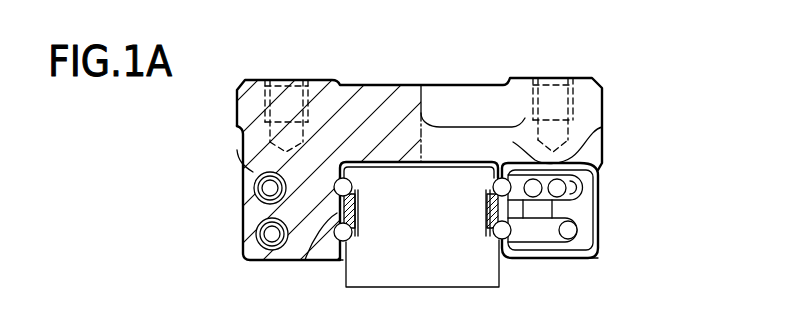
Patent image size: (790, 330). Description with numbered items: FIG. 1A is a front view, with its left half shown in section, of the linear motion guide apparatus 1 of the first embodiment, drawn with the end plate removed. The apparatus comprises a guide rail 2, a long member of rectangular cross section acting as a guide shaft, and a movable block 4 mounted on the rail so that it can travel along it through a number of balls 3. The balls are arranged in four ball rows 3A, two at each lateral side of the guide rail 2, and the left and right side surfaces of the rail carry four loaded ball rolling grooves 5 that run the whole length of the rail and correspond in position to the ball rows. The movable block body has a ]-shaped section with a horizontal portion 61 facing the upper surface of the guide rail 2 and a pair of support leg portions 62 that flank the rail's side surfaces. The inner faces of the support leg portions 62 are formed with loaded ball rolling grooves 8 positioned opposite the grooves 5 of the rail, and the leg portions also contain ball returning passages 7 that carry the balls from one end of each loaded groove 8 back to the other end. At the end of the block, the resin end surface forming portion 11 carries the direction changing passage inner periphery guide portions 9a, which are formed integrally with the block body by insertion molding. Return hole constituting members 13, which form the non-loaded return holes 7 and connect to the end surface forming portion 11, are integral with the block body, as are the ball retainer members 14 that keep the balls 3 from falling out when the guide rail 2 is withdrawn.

The linear motion guide apparatus 1 is at (580, 63).
The guide rail 2 is at (493, 277).
The balls 3 is at (601, 158).
The ball rows 3A is at (486, 182).
The movable block 4 is at (489, 78).
The loaded ball rolling grooves 5 is at (357, 208).
The ball returning passages 7 is at (260, 189).
The loaded ball rolling grooves 8 is at (337, 218).
The direction changing passage inner periphery guide portion 9a is at (602, 127).
The end surface forming portion 11 is at (515, 142).
The return hole constituting members 13 is at (253, 171).
The ball retainer members 14 is at (357, 233).
The horizontal portion 61 is at (397, 93).
The support leg portions 62 is at (341, 260).